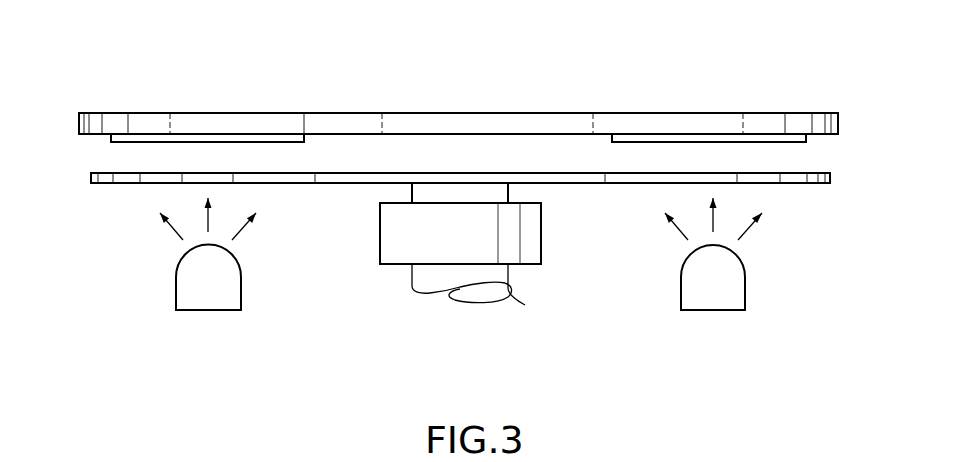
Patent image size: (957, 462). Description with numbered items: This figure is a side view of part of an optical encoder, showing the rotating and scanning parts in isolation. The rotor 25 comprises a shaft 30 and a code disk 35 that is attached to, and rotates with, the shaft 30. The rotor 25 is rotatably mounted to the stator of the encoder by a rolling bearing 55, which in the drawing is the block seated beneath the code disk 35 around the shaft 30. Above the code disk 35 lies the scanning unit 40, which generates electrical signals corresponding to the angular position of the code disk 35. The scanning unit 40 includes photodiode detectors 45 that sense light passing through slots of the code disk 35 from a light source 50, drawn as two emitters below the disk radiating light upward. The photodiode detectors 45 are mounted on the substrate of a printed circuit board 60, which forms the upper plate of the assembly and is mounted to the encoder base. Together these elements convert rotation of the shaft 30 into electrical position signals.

The rotor 25 is at (392, 160).
The shaft 30 is at (492, 276).
The code disk 35 is at (555, 177).
The scanning unit 40 is at (537, 103).
The photodiode detectors 45 is at (750, 137).
The light source 50 is at (720, 293).
The rolling bearing 55 is at (392, 240).
The printed circuit board 60 is at (453, 125).